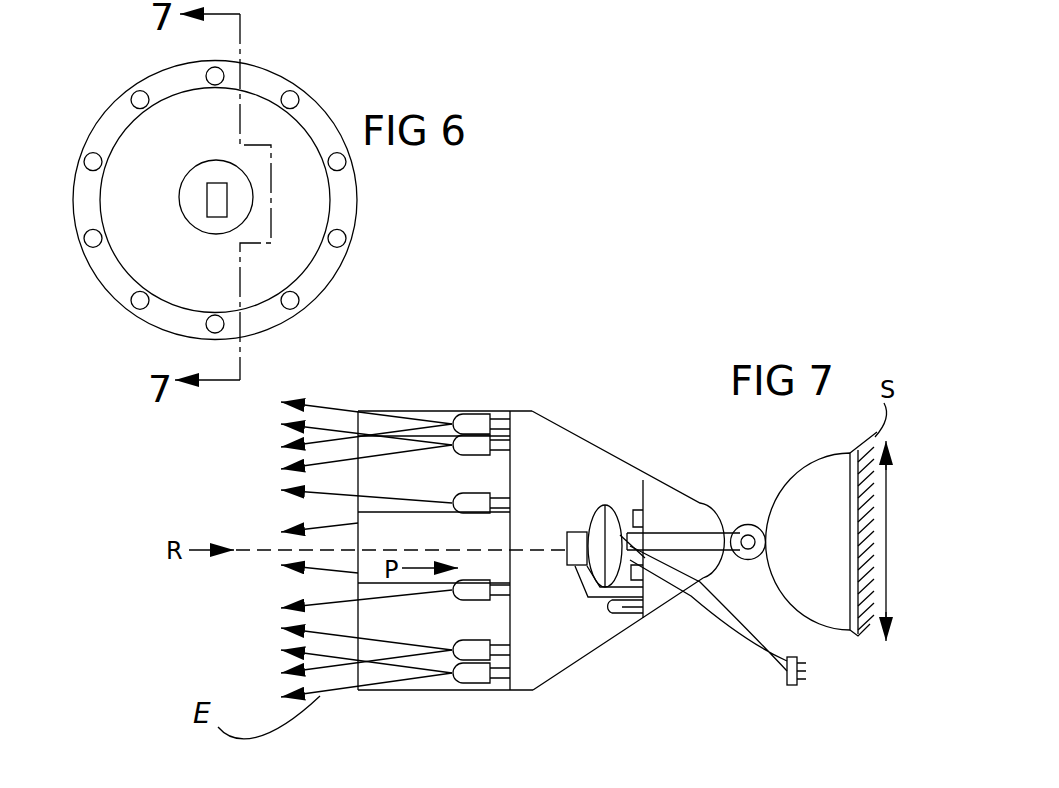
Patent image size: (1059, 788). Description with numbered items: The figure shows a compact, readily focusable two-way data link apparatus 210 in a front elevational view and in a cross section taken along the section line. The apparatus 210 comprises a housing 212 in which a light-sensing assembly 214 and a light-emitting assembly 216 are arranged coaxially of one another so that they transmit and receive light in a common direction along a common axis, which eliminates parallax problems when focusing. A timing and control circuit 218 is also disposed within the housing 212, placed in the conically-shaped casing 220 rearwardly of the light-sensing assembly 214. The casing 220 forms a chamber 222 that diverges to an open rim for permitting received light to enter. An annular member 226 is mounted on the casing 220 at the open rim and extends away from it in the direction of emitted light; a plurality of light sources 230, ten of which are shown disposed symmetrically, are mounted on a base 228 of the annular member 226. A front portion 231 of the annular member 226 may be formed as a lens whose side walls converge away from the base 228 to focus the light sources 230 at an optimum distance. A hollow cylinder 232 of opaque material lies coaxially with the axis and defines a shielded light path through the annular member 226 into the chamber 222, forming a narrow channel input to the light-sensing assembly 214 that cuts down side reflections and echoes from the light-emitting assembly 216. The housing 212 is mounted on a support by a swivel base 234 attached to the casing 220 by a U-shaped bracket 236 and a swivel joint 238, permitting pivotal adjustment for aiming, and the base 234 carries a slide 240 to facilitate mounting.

In FIG. 7, the apparatus 210 is at (502, 380).
In FIG. 6, the housing 212 is at (86, 273).
In FIG. 7, the housing 212 is at (520, 700).
In FIG. 6, the light-sensing assembly 214 is at (200, 232).
In FIG. 7, the light-sensing assembly 214 is at (580, 522).
In FIG. 7, the light-emitting assembly 216 is at (432, 696).
In FIG. 7, the timing and control circuit 218 is at (608, 622).
In FIG. 7, the conically-shaped casing 220 is at (643, 606).
In FIG. 6, the chamber 222 is at (246, 144).
In FIG. 7, the chamber 222 is at (541, 550).
In FIG. 6, the annular member 226 is at (278, 82).
In FIG. 7, the annular member 226 is at (396, 406).
In FIG. 6, the base 228 is at (322, 116).
In FIG. 7, the base 228 is at (365, 447).
In FIG. 6, the light sources 230 is at (97, 154).
In FIG. 7, the light sources 230 is at (462, 654).
In FIG. 6, the front portion 231 is at (301, 300).
In FIG. 7, the front portion 231 is at (394, 692).
In FIG. 6, the hollow cylinder 232 is at (190, 222).
In FIG. 7, the hollow cylinder 232 is at (415, 528).
In FIG. 7, the swivel base 234 is at (820, 482).
In FIG. 7, the U-shaped bracket 236 is at (682, 542).
In FIG. 7, the swivel joint 238 is at (744, 562).
In FIG. 7, the slide 240 is at (858, 636).